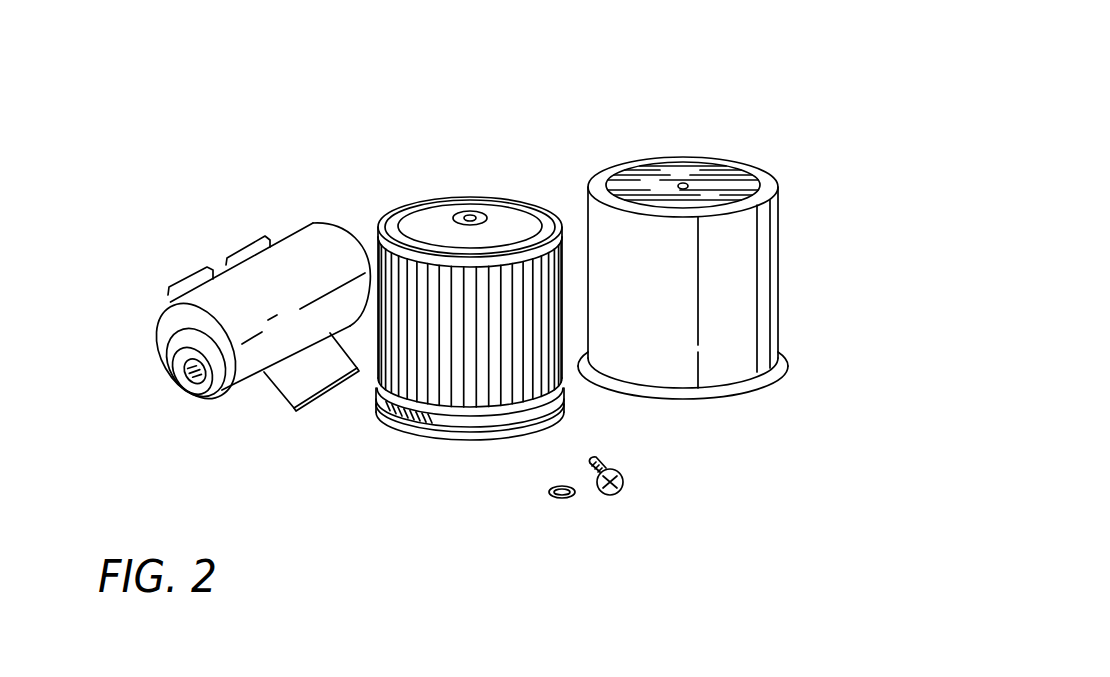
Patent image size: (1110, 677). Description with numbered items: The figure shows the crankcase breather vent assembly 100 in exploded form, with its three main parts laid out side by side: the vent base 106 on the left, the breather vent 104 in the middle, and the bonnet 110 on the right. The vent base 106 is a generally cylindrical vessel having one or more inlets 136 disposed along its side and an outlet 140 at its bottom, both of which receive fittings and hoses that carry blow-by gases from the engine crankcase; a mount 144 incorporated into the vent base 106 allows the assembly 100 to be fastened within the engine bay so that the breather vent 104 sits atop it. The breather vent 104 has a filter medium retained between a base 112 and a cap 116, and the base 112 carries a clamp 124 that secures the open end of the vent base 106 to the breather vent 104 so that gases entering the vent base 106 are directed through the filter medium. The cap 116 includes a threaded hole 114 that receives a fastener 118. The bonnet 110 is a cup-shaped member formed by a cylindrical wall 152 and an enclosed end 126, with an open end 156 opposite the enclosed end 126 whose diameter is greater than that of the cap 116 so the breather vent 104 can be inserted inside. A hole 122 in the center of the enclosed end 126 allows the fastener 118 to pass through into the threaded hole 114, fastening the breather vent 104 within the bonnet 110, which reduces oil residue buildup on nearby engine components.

The crankcase breather vent assembly 100 is at (553, 78).
The breather vent 104 is at (489, 466).
The vent base 106 is at (192, 443).
The bonnet 110 is at (714, 94).
The base 112 is at (445, 410).
The threaded hole 114 is at (467, 216).
The cap 116 is at (393, 215).
The fastener 118 is at (620, 486).
The hole 122 is at (685, 184).
The clamp 124 is at (393, 418).
The enclosed end 126 is at (655, 157).
The inlets 136 is at (230, 252).
The outlet 140 is at (168, 360).
The mount 144 is at (293, 383).
The cylindrical wall 152 is at (757, 258).
The open end 156 is at (752, 398).